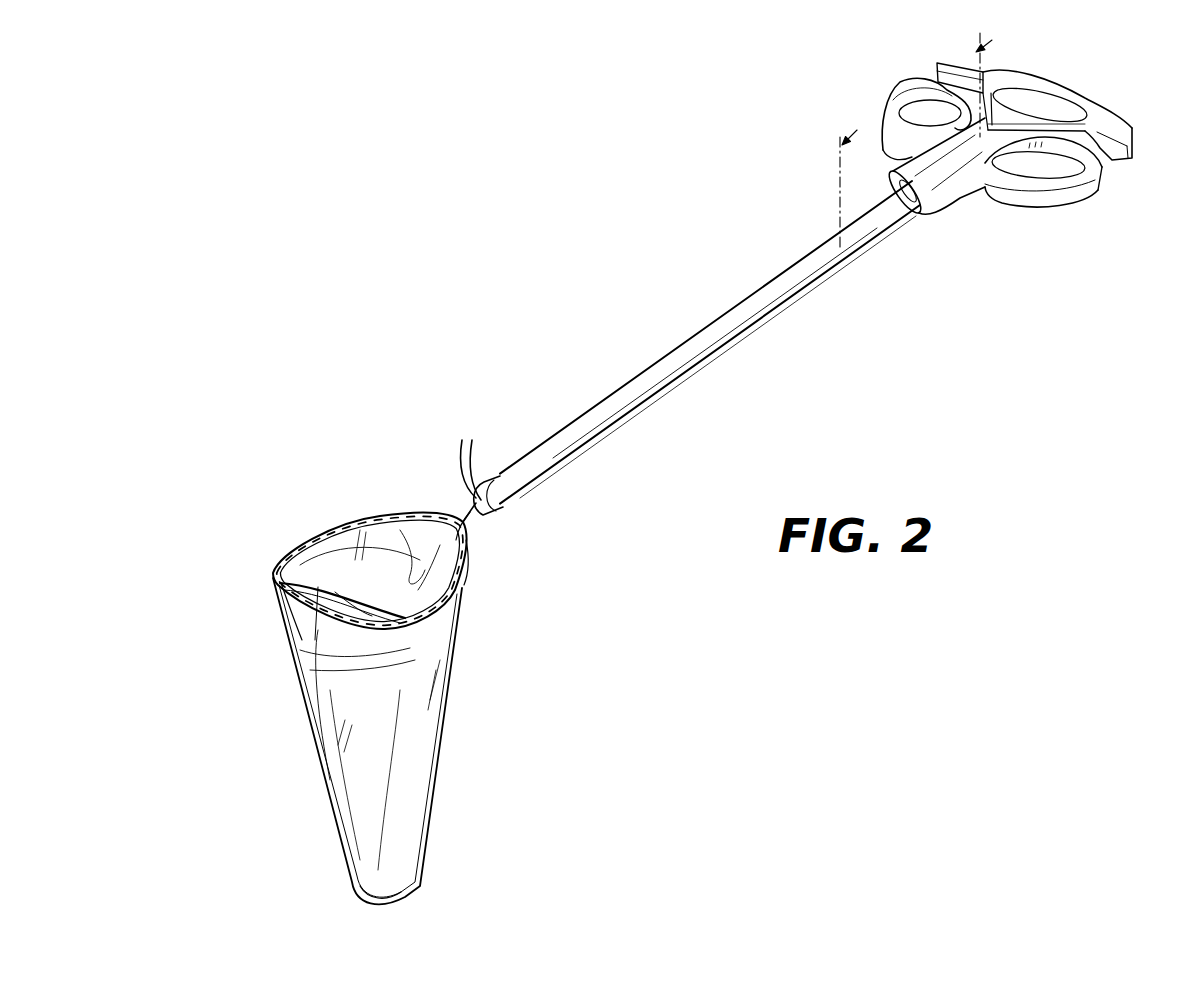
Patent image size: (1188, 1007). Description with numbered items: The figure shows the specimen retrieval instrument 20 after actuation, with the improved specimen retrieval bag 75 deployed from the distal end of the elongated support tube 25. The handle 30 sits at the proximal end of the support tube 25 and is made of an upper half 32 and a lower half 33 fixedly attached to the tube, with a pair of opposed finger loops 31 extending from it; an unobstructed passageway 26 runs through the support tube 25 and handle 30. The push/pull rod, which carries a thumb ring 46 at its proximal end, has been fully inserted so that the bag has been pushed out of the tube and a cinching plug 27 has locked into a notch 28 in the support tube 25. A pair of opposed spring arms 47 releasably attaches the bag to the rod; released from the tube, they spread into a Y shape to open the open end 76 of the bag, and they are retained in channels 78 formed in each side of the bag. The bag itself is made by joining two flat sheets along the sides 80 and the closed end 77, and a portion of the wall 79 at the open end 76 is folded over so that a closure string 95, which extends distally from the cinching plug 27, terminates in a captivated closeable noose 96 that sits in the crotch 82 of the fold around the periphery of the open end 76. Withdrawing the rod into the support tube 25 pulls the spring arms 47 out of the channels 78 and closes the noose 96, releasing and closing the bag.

The specimen retrieval instrument 20 is at (830, 390).
The elongated support tube 25 is at (716, 316).
The unobstructed passageway 26 is at (502, 498).
The cinching plug 27 is at (490, 500).
The notch 28 is at (498, 478).
The handle 30 is at (968, 200).
The finger loops 31 is at (885, 97).
The upper half 32 is at (1103, 173).
The lower half 33 is at (1057, 210).
The thumb ring 46 is at (1082, 95).
The spring arms 47 is at (465, 456).
The specimen retrieval bag 75 is at (440, 807).
The open end 76 is at (375, 562).
The closed end 77 is at (410, 890).
The channels 78 is at (410, 658).
The wall 79 is at (400, 727).
The sides 80 is at (450, 698).
The crotch 82 is at (318, 622).
The closure string 95 is at (483, 515).
The closeable noose 96 is at (470, 580).